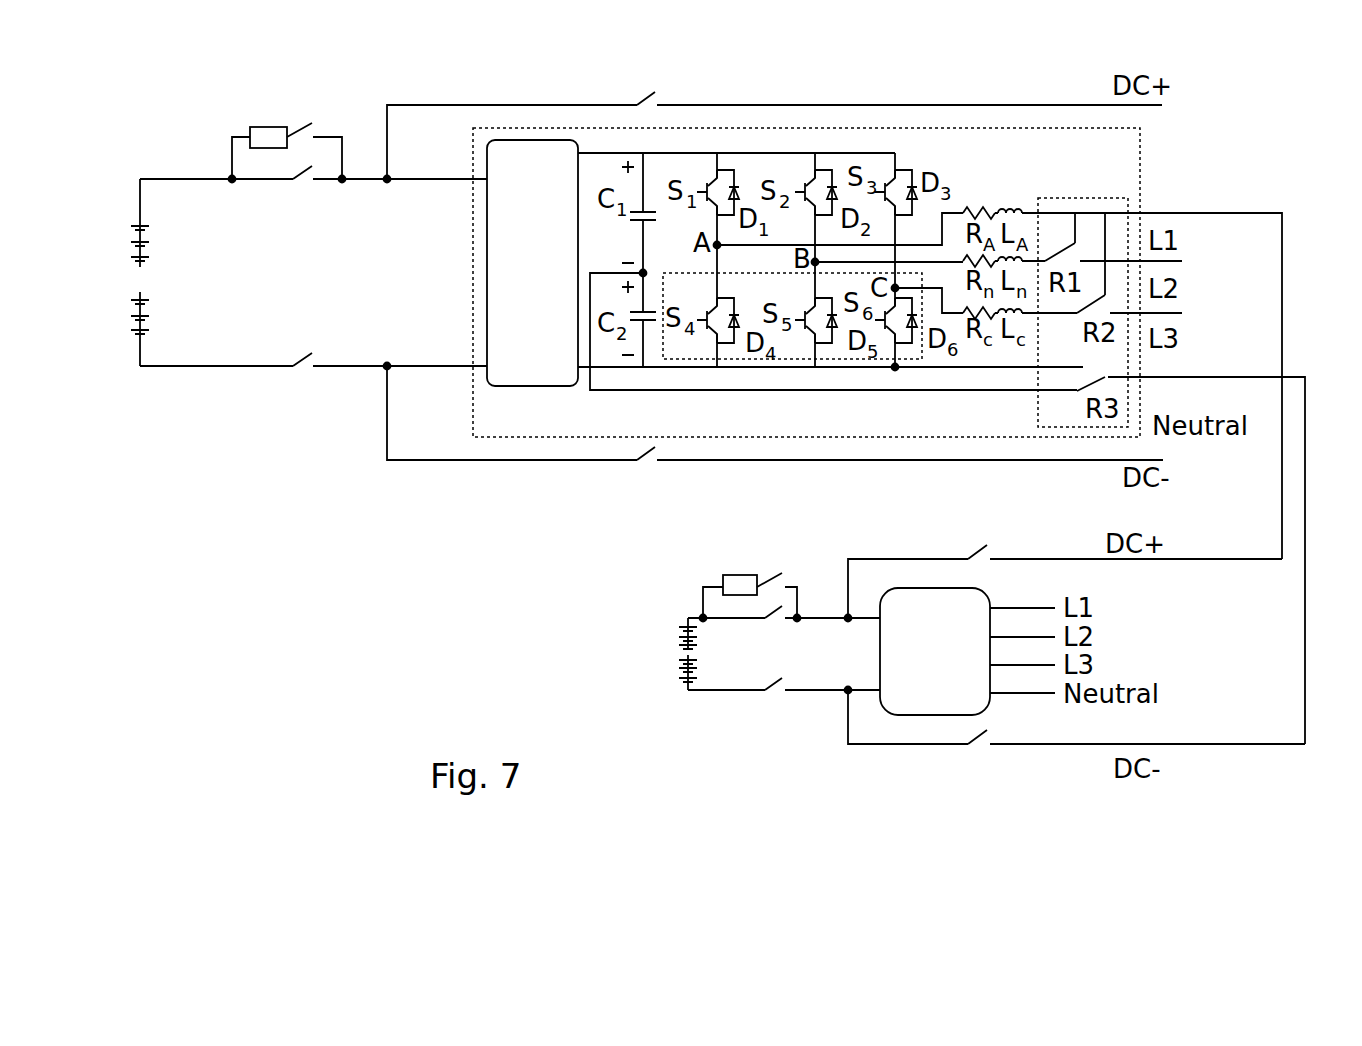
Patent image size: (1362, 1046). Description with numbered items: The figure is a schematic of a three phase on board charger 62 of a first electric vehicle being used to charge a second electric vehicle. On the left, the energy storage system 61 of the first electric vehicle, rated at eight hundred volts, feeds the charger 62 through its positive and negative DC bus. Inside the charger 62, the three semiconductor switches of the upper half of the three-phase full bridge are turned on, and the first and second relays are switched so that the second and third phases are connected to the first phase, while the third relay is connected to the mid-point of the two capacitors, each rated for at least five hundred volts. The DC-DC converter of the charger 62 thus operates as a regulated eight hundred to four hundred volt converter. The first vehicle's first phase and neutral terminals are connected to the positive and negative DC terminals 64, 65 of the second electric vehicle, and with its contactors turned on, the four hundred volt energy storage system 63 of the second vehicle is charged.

The energy storage system of the first electric vehicle 61 is at (135, 473).
The three phase on board charger 62 is at (1102, 473).
The energy storage system of the second electric vehicle 63 is at (690, 767).
The DC+ terminal of the second electric vehicle 64 is at (843, 612).
The DC− terminal of the second electric vehicle 65 is at (856, 697).